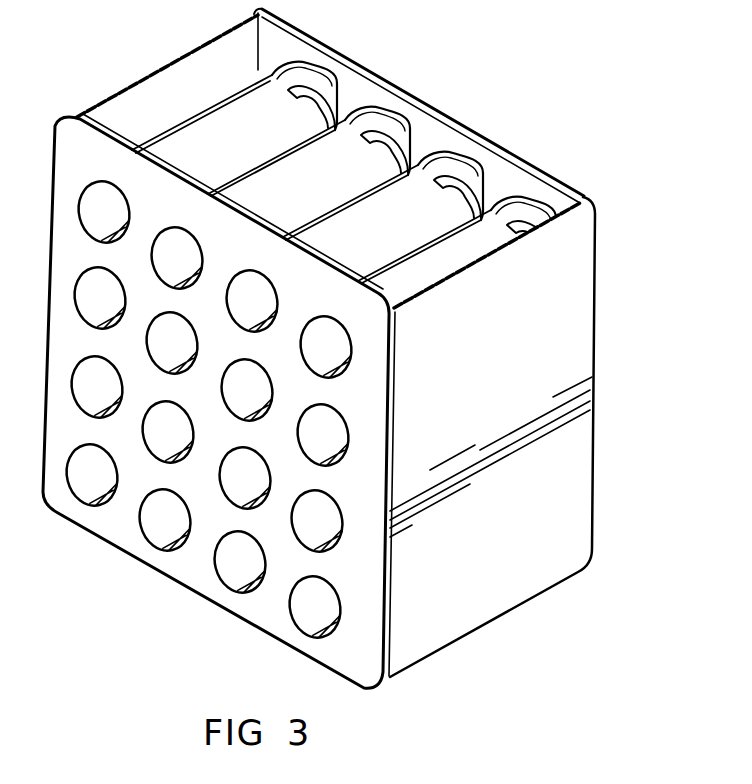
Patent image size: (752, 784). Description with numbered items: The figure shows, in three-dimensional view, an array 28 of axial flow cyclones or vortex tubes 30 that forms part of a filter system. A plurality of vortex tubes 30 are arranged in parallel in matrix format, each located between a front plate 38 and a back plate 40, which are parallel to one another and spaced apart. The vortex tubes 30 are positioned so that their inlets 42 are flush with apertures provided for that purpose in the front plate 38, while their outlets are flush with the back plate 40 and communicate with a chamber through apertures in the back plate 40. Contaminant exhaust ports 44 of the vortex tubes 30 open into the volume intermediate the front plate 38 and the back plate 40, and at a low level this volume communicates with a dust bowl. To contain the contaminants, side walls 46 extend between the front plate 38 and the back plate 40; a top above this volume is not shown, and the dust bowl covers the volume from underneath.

The array 28 is at (342, 348).
The vortex tube 30 is at (255, 148).
The front plate 38 is at (219, 401).
The back plate 40 is at (442, 135).
The inlet 42 is at (102, 512).
The contaminant exhaust port 44 is at (408, 124).
The side wall 46 is at (203, 100).